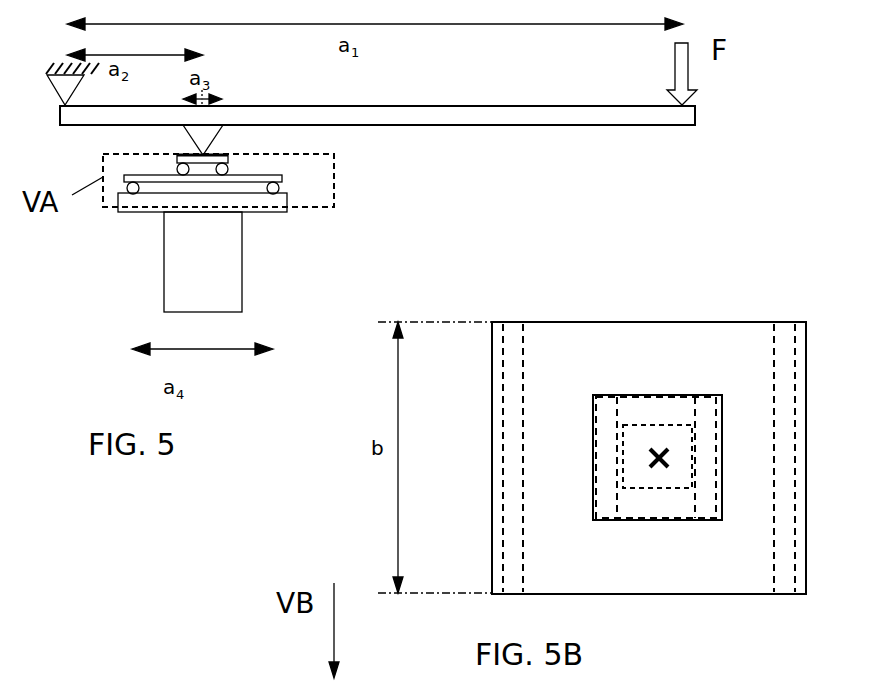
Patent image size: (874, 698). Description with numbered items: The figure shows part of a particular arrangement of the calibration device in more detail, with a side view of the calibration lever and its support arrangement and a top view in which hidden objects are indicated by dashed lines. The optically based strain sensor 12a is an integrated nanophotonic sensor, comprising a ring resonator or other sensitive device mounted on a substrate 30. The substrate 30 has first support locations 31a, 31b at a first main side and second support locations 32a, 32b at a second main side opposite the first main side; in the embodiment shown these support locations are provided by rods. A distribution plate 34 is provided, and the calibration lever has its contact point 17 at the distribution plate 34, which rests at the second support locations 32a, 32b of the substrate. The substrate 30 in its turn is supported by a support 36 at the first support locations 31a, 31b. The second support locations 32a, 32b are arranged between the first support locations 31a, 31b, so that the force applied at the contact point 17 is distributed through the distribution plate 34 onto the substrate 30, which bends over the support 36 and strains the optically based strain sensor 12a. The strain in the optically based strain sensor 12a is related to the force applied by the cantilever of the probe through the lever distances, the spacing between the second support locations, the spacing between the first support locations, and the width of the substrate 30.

In FIG. 5, the support 36 is at (252, 200).
In FIG. 5B, the substrate 30 is at (543, 322).
In FIG. 5B, the first support location 31a is at (513, 332).
In FIG. 5B, the first support location 31b is at (785, 330).
In FIG. 5B, the distribution plate 34 is at (682, 394).
In FIG. 5B, the second support location 32a is at (607, 488).
In FIG. 5B, the second support location 32b is at (700, 488).
In FIG. 5B, the optically based strain sensor 12a is at (648, 425).
In FIG. 5B, the contact point 17 is at (648, 453).